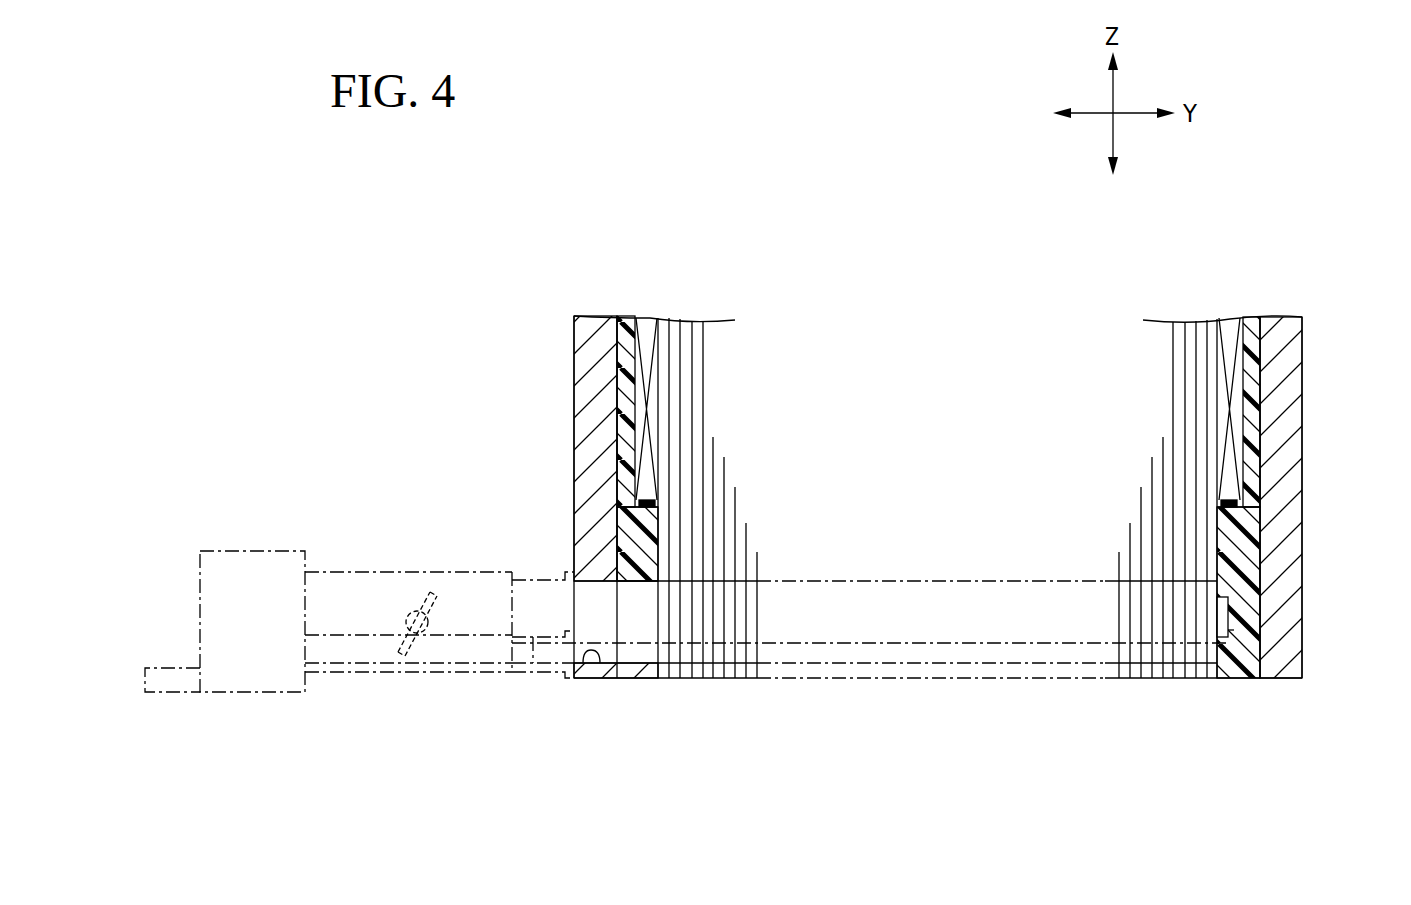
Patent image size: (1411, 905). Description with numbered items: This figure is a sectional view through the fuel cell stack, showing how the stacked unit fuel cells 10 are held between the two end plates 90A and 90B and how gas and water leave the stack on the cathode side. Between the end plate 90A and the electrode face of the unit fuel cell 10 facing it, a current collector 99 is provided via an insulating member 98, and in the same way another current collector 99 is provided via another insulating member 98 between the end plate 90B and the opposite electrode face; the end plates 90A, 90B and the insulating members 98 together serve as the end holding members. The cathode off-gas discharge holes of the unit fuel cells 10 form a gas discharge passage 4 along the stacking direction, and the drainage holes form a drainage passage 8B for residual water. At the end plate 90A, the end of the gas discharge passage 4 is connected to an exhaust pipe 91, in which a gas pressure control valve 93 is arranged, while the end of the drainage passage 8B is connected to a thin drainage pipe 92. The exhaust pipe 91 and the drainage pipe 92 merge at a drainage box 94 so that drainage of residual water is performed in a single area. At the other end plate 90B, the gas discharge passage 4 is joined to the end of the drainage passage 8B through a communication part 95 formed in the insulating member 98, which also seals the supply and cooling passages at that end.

The gas discharge passage 4 is at (586, 660).
The drainage passage 8B is at (798, 643).
The unit fuel cell 10 is at (687, 320).
The end plate 90A is at (583, 440).
The end plate 90B is at (1290, 445).
The exhaust pipe 91 is at (368, 573).
The drainage pipe 92 is at (332, 637).
The gas pressure control valve 93 is at (420, 600).
The drainage box 94 is at (258, 690).
The communication part 95 is at (1225, 625).
The insulating member 98 is at (640, 523).
The current collector 99 is at (1232, 330).